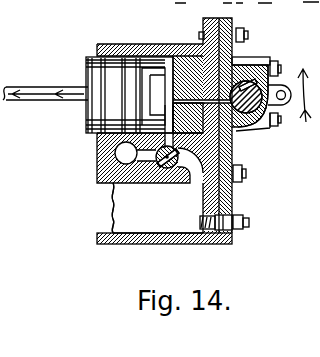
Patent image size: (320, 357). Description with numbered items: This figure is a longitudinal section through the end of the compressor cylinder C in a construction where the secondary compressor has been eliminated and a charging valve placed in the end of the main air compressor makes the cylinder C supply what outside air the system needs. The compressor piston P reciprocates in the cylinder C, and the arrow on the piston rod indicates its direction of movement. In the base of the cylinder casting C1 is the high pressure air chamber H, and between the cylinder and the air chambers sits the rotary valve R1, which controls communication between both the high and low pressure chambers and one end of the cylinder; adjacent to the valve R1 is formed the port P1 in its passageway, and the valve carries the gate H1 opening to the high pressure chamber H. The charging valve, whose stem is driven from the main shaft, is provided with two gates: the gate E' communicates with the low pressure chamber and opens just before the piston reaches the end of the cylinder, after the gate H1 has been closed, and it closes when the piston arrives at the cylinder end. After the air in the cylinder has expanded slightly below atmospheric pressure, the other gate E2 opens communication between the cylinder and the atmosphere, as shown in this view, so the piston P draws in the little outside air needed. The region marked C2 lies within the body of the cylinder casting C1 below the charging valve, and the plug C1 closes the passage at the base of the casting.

The compressor cylinder C is at (137, 62).
The compressor piston P is at (113, 95).
The gate of the charging valve E' is at (265, 74).
The gate of the charging valve E2 is at (245, 105).
The valve body passage C2 is at (211, 114).
The port P1 is at (125, 149).
The gate of valve R1 H1 is at (113, 183).
The high pressure air chamber H is at (158, 219).
The rotary valve R1 is at (168, 183).
The cylinder casting C1 is at (213, 236).